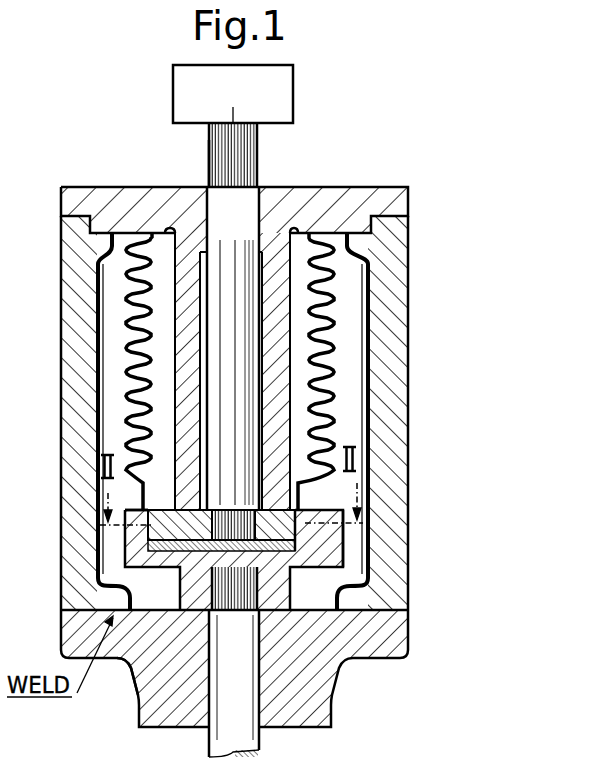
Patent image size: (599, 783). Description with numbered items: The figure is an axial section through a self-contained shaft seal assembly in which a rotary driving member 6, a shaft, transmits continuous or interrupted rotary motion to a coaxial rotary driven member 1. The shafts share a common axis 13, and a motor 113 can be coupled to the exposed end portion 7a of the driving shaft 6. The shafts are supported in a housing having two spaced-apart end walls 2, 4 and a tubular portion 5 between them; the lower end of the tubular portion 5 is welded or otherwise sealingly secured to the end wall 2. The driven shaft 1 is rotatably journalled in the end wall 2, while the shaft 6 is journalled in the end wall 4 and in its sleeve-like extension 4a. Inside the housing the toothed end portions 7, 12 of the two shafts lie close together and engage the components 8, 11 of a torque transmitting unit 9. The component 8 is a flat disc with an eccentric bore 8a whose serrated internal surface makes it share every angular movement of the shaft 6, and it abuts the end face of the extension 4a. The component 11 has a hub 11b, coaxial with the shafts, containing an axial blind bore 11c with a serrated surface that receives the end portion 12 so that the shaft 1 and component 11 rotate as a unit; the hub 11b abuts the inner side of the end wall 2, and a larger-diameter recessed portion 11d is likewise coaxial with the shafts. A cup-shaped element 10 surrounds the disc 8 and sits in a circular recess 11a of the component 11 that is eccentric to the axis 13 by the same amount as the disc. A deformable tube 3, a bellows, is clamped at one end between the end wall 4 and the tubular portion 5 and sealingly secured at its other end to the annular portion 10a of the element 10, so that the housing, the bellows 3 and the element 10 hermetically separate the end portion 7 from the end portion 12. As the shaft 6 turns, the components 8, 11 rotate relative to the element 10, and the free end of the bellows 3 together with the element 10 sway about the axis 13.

The rotary driven member 1 is at (233, 695).
The end wall 2 is at (377, 633).
The deformable tube 3 is at (332, 303).
The end wall 4 is at (388, 202).
The sleeve-like extension 4a is at (268, 421).
The tubular portion 5 is at (392, 373).
The rotary driving member 6 is at (237, 218).
The end portion 7 is at (268, 516).
The exposed end portion 7a is at (208, 158).
The component 8 is at (178, 527).
The eccentric bore 8a is at (240, 525).
The torque transmitting unit 9 is at (113, 535).
The cup-shaped element 10 is at (128, 560).
The annular portion 10a is at (147, 512).
The component 11 is at (348, 533).
The recess 11a is at (147, 547).
The hub 11b is at (136, 684).
The axial blind bore 11c is at (216, 606).
The larger-diameter portion 11d is at (335, 542).
The end portion 12 is at (247, 583).
The common axis 13 is at (233, 115).
The motor 113 is at (283, 80).